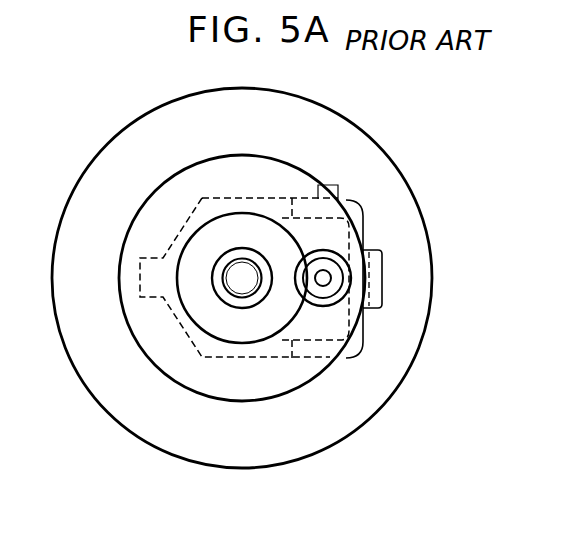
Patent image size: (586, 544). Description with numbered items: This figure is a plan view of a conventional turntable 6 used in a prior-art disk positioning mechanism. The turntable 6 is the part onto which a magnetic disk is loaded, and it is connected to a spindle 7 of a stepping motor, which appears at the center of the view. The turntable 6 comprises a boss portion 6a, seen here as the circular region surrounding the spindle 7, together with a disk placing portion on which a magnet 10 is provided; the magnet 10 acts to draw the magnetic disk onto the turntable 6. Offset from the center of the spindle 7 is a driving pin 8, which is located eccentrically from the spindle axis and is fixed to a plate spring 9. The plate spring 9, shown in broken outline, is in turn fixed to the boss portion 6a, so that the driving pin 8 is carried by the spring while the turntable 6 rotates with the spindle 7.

The turntable 6 is at (421, 352).
The boss portion 6a is at (213, 318).
The spindle 7 is at (250, 287).
The driving pin 8 is at (331, 270).
The plate spring 9 is at (348, 212).
The magnet 10 is at (155, 336).